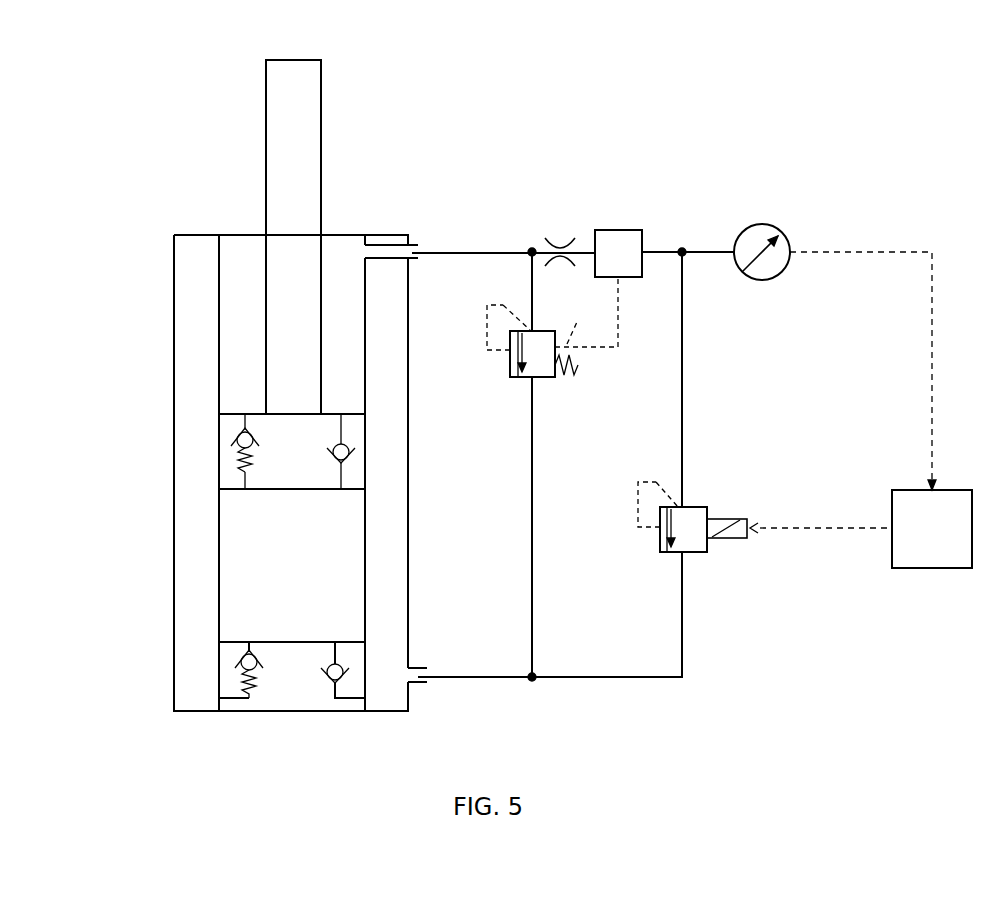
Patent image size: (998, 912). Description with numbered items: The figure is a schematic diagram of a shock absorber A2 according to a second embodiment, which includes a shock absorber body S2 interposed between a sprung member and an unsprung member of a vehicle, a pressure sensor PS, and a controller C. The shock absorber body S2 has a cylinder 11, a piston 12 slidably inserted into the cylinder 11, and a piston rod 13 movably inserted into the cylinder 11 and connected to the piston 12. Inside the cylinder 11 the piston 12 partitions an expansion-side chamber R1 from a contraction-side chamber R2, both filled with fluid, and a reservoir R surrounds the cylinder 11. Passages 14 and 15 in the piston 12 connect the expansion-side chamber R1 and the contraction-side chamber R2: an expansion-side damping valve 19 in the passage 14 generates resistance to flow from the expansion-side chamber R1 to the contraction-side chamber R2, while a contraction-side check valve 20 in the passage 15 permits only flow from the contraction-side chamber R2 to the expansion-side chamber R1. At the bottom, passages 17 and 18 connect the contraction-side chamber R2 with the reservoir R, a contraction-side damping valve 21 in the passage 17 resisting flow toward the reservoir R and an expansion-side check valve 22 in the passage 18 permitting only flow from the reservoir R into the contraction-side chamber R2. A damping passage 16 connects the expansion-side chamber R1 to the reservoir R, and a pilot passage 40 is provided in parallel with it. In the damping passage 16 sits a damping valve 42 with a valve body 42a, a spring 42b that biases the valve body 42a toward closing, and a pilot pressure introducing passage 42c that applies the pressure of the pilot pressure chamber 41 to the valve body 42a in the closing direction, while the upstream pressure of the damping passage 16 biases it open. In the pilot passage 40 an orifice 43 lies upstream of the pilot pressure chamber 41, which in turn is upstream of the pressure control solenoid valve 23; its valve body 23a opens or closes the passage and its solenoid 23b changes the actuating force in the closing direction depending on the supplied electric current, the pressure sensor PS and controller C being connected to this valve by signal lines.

The shock absorber A2 is at (190, 128).
The shock absorber body S2 is at (173, 235).
The cylinder 11 is at (219, 277).
The piston 12 is at (219, 470).
The piston rod 13 is at (322, 118).
The passage 14 is at (243, 423).
The passage 15 is at (342, 473).
The damping passage 16 is at (532, 578).
The passage 17 is at (238, 698).
The passage 18 is at (346, 712).
The expansion-side damping valve 19 is at (232, 433).
The contraction-side check valve 20 is at (354, 458).
The contraction-side damping valve 21 is at (257, 660).
The expansion-side check valve 22 is at (327, 675).
The pressure control solenoid valve 23 is at (708, 553).
The valve body 23a is at (660, 537).
The solenoid 23b is at (725, 519).
The pilot passage 40 is at (688, 677).
The pilot pressure chamber 41 is at (616, 230).
The damping valve 42 is at (548, 382).
The valve body 42a is at (512, 377).
The spring 42b is at (573, 372).
The pilot pressure introducing passage 42c is at (577, 322).
The orifice 43 is at (560, 245).
The expansion-side chamber R1 is at (247, 320).
The contraction-side chamber R2 is at (250, 550).
The reservoir R is at (204, 608).
The pressure sensor PS is at (783, 230).
The controller C is at (943, 490).